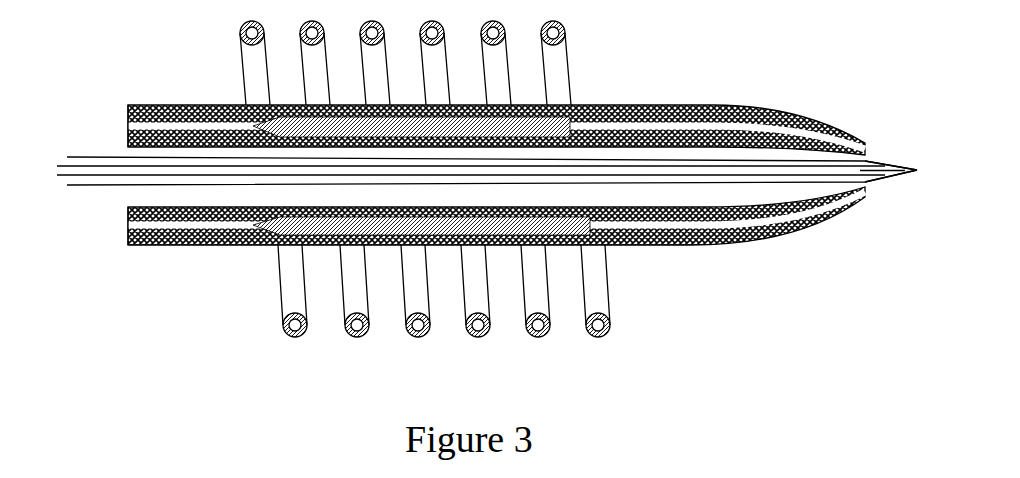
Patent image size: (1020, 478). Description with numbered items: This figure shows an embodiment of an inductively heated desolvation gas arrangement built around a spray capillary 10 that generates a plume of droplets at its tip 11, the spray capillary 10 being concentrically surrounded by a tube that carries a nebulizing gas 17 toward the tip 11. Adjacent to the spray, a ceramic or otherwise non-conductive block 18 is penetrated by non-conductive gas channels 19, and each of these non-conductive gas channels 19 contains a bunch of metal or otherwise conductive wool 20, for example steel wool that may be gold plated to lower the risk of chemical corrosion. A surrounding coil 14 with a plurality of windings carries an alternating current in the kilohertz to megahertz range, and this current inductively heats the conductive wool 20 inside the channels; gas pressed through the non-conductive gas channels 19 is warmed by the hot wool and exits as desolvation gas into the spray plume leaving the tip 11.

The spray capillary 10 is at (60, 166).
The tip 11 is at (891, 185).
The coil 14 is at (443, 182).
The nebulizing gas 17 is at (61, 190).
The non-conductive block 18 is at (496, 178).
The non-conductive gas channels 19 is at (120, 127).
The conductive wool 20 is at (563, 125).